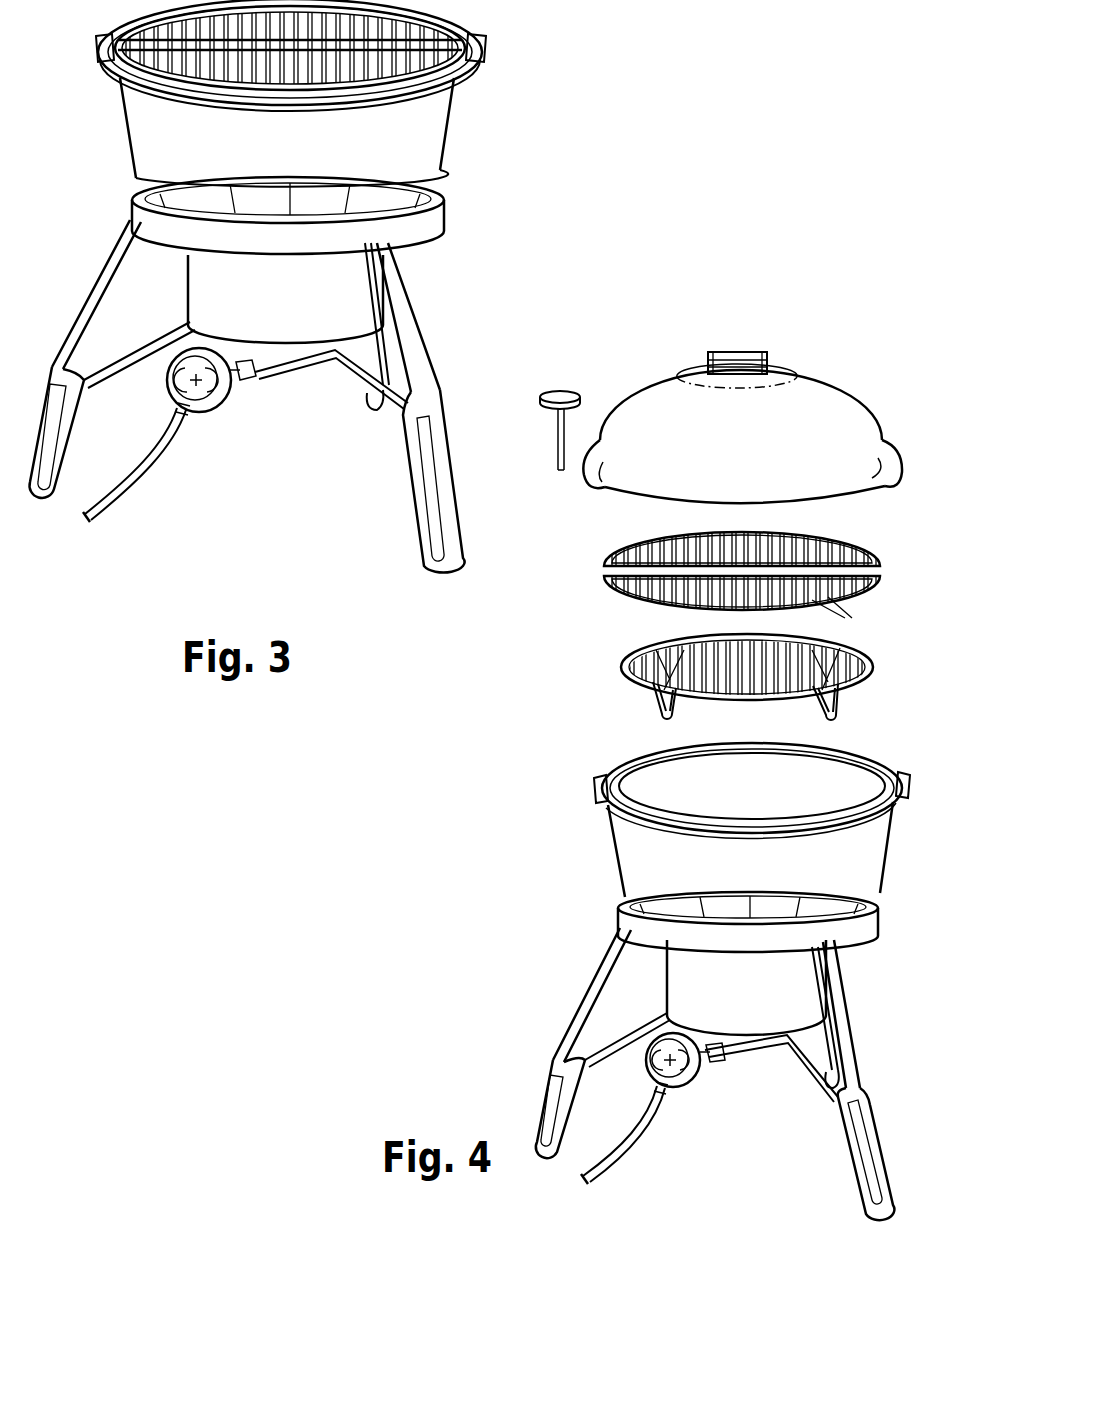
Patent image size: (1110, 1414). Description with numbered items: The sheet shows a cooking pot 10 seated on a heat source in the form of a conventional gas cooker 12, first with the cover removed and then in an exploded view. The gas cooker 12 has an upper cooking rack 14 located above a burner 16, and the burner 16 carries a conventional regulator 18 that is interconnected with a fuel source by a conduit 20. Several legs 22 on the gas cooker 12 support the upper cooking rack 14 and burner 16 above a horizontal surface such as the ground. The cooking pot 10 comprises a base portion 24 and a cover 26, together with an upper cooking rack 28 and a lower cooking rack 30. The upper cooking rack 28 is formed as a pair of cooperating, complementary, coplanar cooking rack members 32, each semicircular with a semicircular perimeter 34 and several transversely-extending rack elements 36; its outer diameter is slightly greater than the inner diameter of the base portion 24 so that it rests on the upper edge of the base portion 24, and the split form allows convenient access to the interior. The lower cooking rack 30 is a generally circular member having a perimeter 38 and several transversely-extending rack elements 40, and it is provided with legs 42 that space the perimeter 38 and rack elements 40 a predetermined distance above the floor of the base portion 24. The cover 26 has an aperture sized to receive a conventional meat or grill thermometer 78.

In FIG. 4, the cooking pot 10 is at (854, 531).
In FIG. 3, the gas cooker 12 is at (442, 249).
In FIG. 4, the gas cooker 12 is at (861, 1005).
In FIG. 3, the upper cooking rack 14 is at (432, 207).
In FIG. 3, the burner 16 is at (292, 366).
In FIG. 4, the burner 16 is at (750, 1047).
In FIG. 3, the regulator 18 is at (242, 373).
In FIG. 4, the regulator 18 is at (713, 1050).
In FIG. 3, the conduit 20 is at (150, 487).
In FIG. 4, the conduit 20 is at (643, 1137).
In FIG. 3, the legs 22 is at (78, 407).
In FIG. 4, the legs 22 is at (552, 1060).
In FIG. 3, the base portion 24 is at (452, 118).
In FIG. 4, the base portion 24 is at (612, 849).
In FIG. 4, the cover 26 is at (821, 377).
In FIG. 4, the upper cooking rack 28 is at (729, 576).
In FIG. 4, the lower cooking rack 30 is at (728, 688).
In FIG. 4, the cooking rack members 32 is at (861, 550).
In FIG. 4, the semicircular perimeter 34 is at (648, 548).
In FIG. 4, the rack elements 36 is at (832, 596).
In FIG. 4, the perimeter 38 is at (871, 668).
In FIG. 4, the rack elements 40 is at (790, 697).
In FIG. 4, the legs 42 is at (662, 704).
In FIG. 4, the grill thermometer 78 is at (568, 440).